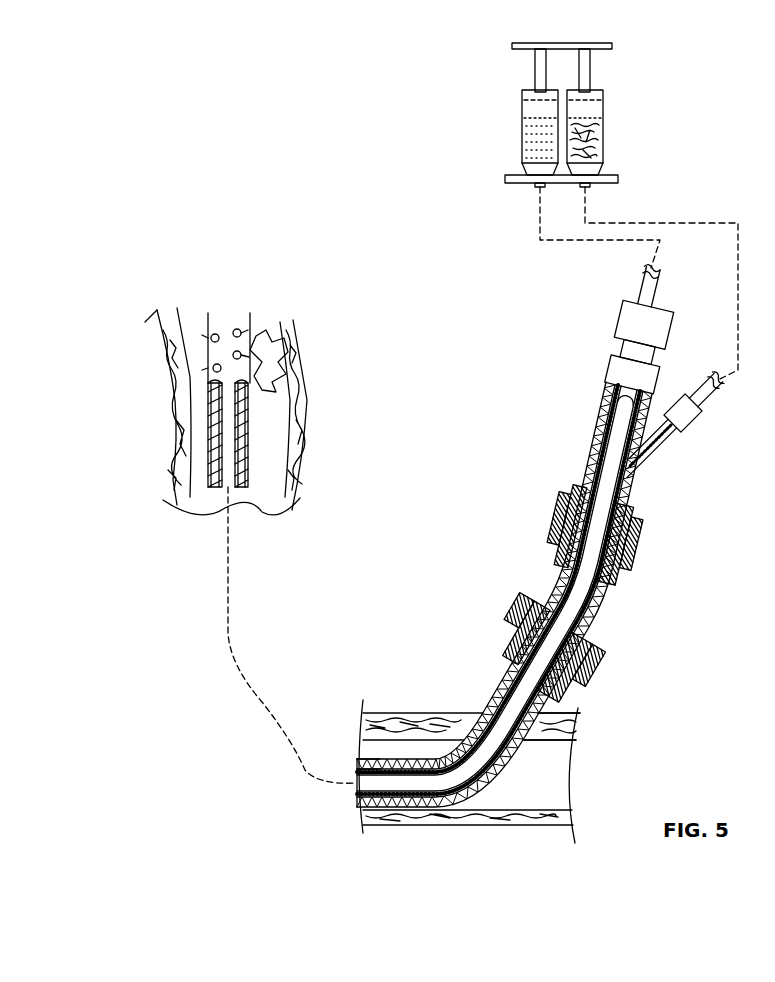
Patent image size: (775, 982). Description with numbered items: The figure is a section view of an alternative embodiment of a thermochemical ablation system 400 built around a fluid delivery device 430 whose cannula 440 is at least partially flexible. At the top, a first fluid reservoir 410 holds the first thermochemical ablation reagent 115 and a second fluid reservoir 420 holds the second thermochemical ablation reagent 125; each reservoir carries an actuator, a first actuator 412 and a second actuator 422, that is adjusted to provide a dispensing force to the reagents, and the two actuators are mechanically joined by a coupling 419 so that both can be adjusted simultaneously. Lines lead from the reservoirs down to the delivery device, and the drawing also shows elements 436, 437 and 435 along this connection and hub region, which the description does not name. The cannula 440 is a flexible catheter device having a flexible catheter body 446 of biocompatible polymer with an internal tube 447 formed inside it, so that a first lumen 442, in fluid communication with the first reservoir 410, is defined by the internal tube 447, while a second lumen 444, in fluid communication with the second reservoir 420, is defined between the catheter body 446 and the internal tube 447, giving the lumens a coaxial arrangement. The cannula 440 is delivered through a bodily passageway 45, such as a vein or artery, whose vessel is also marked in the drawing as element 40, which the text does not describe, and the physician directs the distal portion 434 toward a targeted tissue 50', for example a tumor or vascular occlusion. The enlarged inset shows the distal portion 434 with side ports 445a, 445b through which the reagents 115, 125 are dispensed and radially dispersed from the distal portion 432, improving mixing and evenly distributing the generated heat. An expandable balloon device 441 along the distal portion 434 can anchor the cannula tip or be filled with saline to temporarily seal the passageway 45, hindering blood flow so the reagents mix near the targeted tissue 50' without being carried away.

The thermochemical ablation system 400 is at (251, 71).
The coupling 419 is at (512, 48).
The first actuator 412 is at (535, 70).
The second actuator 422 is at (590, 75).
The first fluid reservoir 410 is at (520, 125).
The second fluid reservoir 420 is at (608, 123).
The first thermochemical ablation reagent 115 is at (533, 140).
The second thermochemical ablation reagent 125 is at (595, 148).
The first supply tube 436 is at (640, 295).
The second supply tube 437 is at (703, 418).
The fluid delivery device 430 is at (576, 398).
The distal portion 432 is at (530, 413).
The outer sheath 435 is at (587, 465).
The cannula 440 is at (497, 710).
The first lumen 442 is at (510, 685).
The second lumen 444 is at (543, 697).
The flexible catheter body 446 is at (365, 767).
The internal tube 447 is at (355, 790).
The blood vessel 40 is at (392, 713).
The bodily passageway 45 is at (539, 798).
The targeted tissue 50' is at (202, 412).
The distal portion 434 is at (303, 410).
The expandable balloon device 441 is at (178, 405).
The side port 445a is at (201, 402).
The side port 445b is at (235, 331).